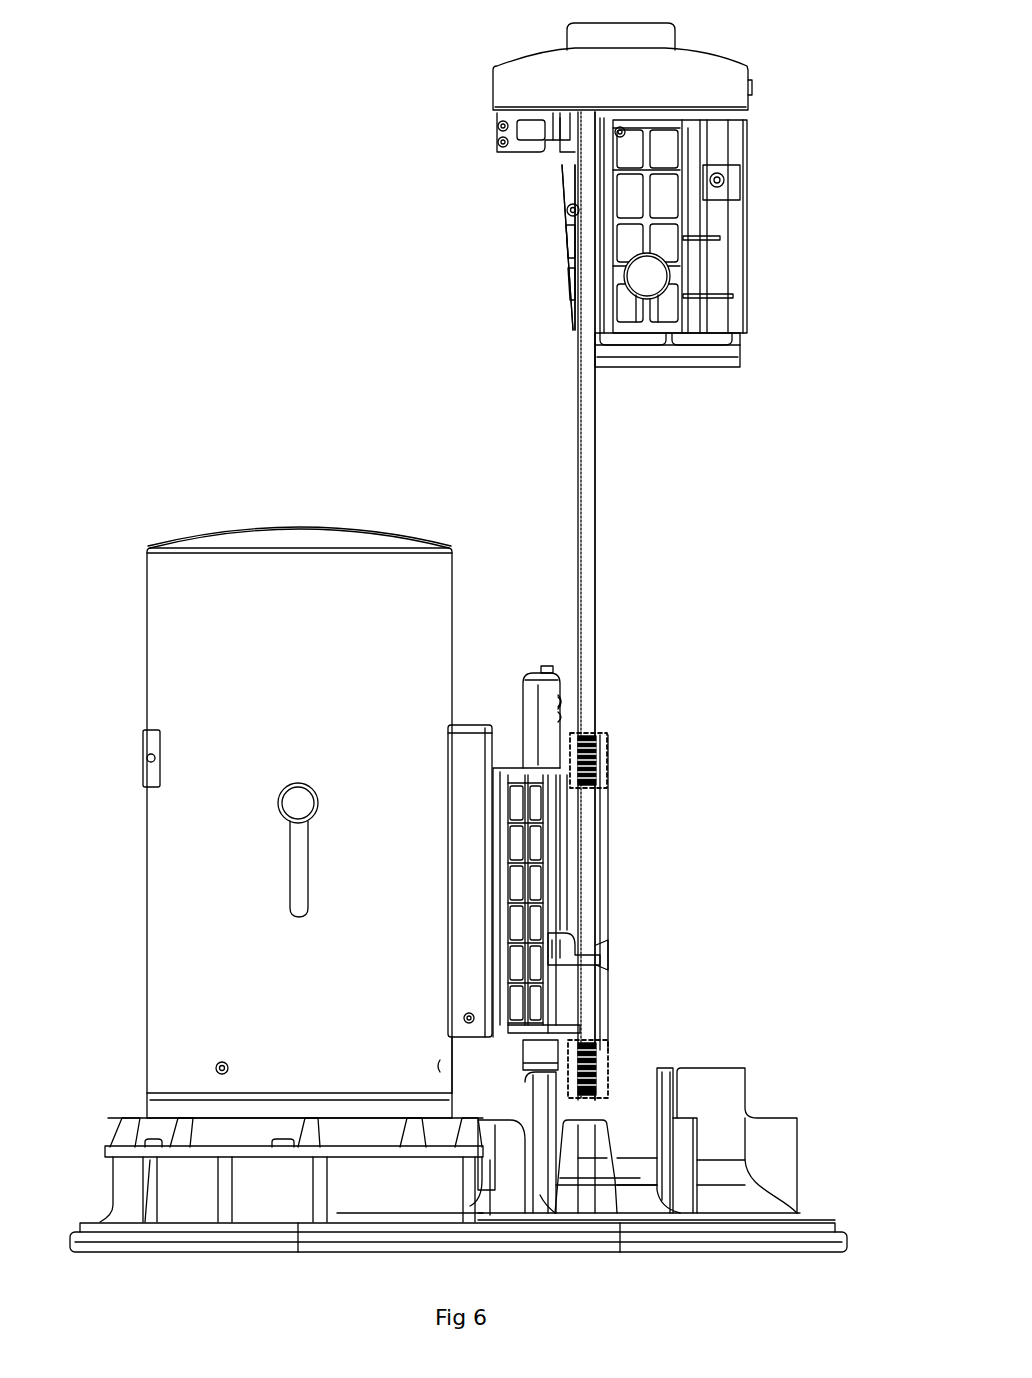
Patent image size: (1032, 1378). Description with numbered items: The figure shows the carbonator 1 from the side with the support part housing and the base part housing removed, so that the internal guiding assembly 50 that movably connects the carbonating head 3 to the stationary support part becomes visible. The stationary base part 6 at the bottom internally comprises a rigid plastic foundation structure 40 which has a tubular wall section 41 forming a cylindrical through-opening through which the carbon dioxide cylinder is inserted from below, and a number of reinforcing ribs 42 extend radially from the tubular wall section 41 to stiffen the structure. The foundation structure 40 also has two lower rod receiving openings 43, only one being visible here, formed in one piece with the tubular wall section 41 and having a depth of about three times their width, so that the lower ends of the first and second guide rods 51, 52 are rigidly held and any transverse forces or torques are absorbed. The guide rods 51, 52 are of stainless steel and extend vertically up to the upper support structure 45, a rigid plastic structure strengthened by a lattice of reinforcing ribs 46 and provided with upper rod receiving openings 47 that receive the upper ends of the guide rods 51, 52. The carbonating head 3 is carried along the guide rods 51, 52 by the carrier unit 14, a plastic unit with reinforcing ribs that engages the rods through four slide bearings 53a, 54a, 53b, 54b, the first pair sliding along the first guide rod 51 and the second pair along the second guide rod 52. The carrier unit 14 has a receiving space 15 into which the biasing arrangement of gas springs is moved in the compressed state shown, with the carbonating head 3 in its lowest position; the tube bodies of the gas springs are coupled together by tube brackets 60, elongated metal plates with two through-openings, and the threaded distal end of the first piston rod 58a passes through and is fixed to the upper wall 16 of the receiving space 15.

The carbonator 1 is at (197, 86).
The carbonating head 3 is at (188, 860).
The base part 6 is at (838, 1232).
The carrier unit 14 is at (529, 630).
The receiving space 15 is at (535, 713).
The upper wall 16 is at (579, 694).
The foundation structure 40 is at (673, 1127).
The tubular wall section 41 is at (720, 1083).
The reinforcing ribs 42 is at (680, 1142).
The lower rod receiving opening 43 is at (590, 1135).
The upper support structure 45 is at (695, 195).
The reinforcing ribs 46 is at (680, 290).
The upper rod receiving openings 47 is at (582, 115).
The guiding assembly 50 is at (458, 396).
The first guide rod 51 is at (591, 495).
The second guide rod 52 is at (591, 495).
The slide bearing 53a is at (595, 768).
The slide bearing 54a is at (588, 760).
The slide bearing 53b is at (592, 1058).
The slide bearing 54b is at (588, 1069).
The first piston rod 58a is at (553, 665).
The tube bracket 60 is at (562, 702).